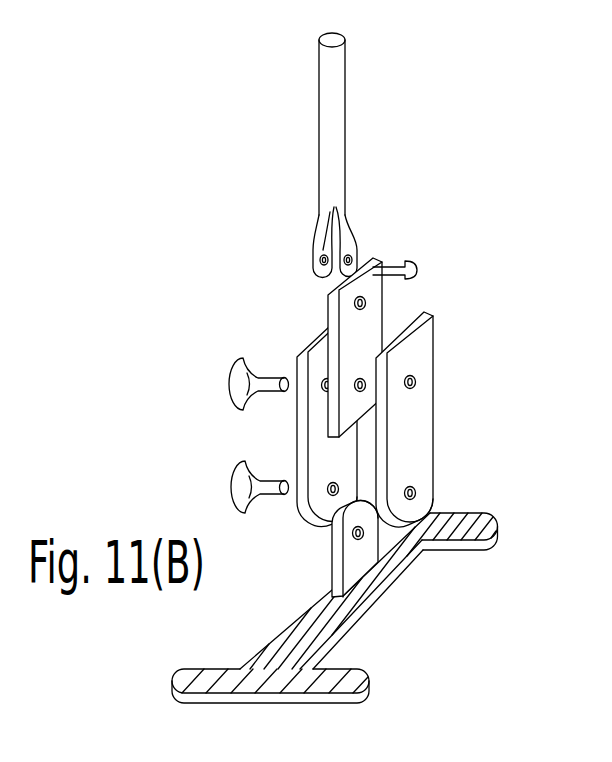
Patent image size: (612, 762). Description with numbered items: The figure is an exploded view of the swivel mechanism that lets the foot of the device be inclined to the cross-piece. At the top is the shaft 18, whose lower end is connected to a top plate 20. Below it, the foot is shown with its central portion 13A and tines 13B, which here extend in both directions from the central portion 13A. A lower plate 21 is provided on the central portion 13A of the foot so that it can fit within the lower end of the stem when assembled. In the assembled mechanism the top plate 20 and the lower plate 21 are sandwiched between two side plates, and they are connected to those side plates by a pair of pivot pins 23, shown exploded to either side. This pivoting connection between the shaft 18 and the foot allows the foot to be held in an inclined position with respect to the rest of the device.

The central portion 13A is at (357, 615).
The tines 13B is at (497, 525).
The shaft 18 is at (332, 124).
The top plate 20 is at (373, 317).
The lower plate 21 is at (362, 565).
The pivot pins 23 is at (244, 372).